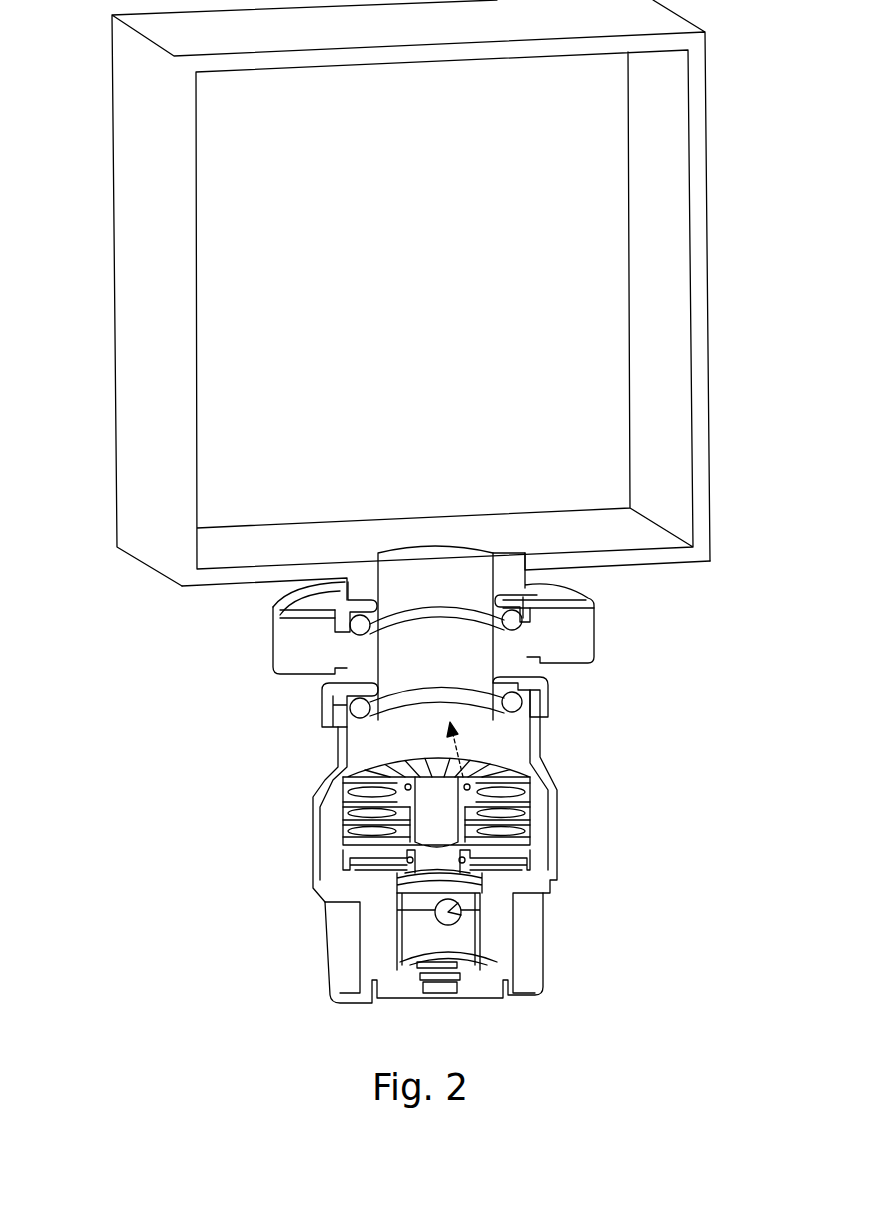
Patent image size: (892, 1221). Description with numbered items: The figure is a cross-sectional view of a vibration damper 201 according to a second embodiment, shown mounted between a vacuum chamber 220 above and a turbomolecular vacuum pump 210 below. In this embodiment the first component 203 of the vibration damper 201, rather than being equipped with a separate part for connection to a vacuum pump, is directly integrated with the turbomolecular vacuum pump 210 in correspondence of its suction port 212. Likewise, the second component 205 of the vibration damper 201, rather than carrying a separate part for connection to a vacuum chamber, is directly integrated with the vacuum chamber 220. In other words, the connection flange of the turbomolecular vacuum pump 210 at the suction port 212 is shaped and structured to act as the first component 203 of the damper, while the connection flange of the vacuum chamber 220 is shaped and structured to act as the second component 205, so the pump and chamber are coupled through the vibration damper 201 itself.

The vacuum chamber 220 is at (440, 320).
The vibration damper 201 is at (419, 633).
The second component 205 is at (350, 646).
The first component 203 is at (550, 722).
The suction port 212 is at (530, 791).
The turbomolecular vacuum pump 210 is at (290, 910).